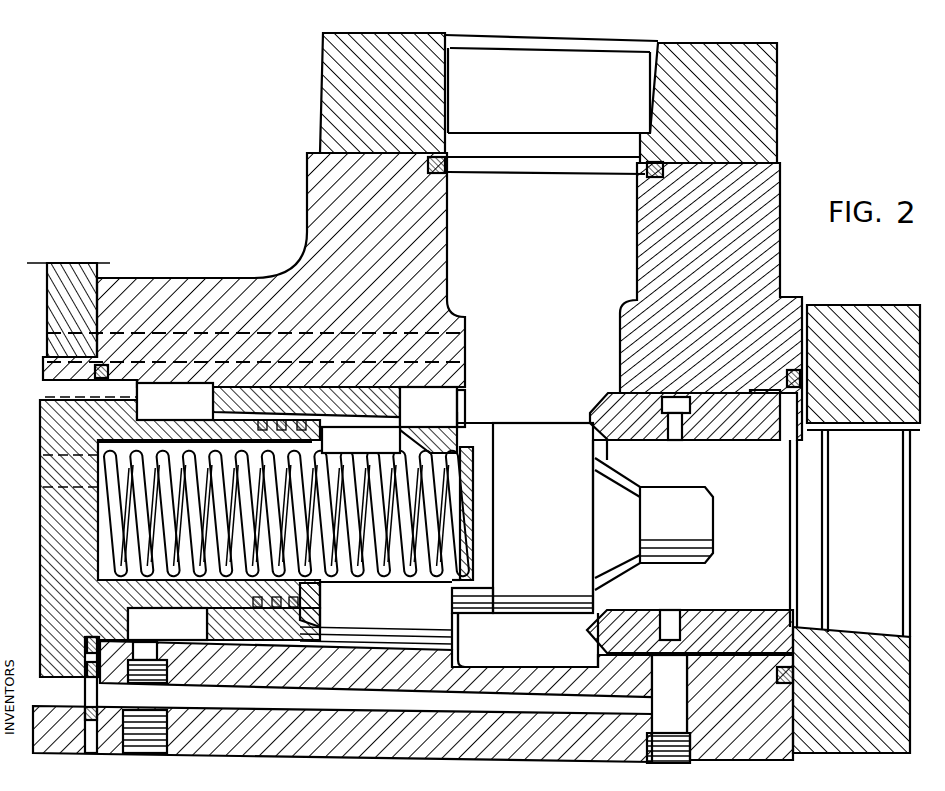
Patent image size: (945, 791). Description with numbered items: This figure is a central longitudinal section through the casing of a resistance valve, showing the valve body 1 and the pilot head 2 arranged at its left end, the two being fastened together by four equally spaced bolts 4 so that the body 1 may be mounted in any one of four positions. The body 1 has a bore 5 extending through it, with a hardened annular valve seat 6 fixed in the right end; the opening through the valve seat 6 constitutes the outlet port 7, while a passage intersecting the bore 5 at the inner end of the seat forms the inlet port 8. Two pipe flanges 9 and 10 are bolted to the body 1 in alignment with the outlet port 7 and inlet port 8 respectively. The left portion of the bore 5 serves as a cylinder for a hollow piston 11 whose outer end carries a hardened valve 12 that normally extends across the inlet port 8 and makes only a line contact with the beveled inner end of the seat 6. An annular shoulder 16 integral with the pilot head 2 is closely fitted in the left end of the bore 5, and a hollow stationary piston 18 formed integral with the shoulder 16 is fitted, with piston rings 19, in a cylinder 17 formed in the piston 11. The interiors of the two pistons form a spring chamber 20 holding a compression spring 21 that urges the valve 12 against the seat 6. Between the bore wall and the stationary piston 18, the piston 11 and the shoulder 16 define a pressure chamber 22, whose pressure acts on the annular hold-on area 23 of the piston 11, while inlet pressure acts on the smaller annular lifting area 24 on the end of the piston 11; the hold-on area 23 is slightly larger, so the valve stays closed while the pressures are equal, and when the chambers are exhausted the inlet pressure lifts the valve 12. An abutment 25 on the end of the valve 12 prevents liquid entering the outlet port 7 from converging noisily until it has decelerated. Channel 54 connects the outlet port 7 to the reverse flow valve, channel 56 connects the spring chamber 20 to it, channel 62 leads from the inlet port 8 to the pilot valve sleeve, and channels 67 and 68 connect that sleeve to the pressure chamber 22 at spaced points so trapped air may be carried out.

The valve body 1 is at (318, 211).
The pilot head 2 is at (47, 279).
The bolts 4 is at (68, 512).
The bore 5 is at (463, 399).
The annular valve seat 6 is at (742, 441).
The outlet port 7 is at (756, 508).
The inlet port 8 is at (548, 254).
The pipe flange 9 is at (895, 690).
The pipe flange 10 is at (762, 92).
The hollow piston 11 is at (447, 411).
The valve 12 is at (540, 480).
The annular shoulder 16 is at (115, 621).
The cylinder 17 is at (385, 432).
The stationary piston 18 is at (370, 582).
The piston rings 19 is at (308, 622).
The spring chamber 20 is at (397, 580).
The compression spring 21 is at (430, 578).
The pressure chamber 22 is at (193, 634).
The hold-on area 23 is at (208, 401).
The lifting area 24 is at (462, 633).
The abutment 25 is at (680, 511).
The channel 54 is at (58, 690).
The channel 56 is at (66, 492).
The channel 62 is at (64, 329).
The channel 67 is at (62, 431).
The channel 68 is at (62, 388).